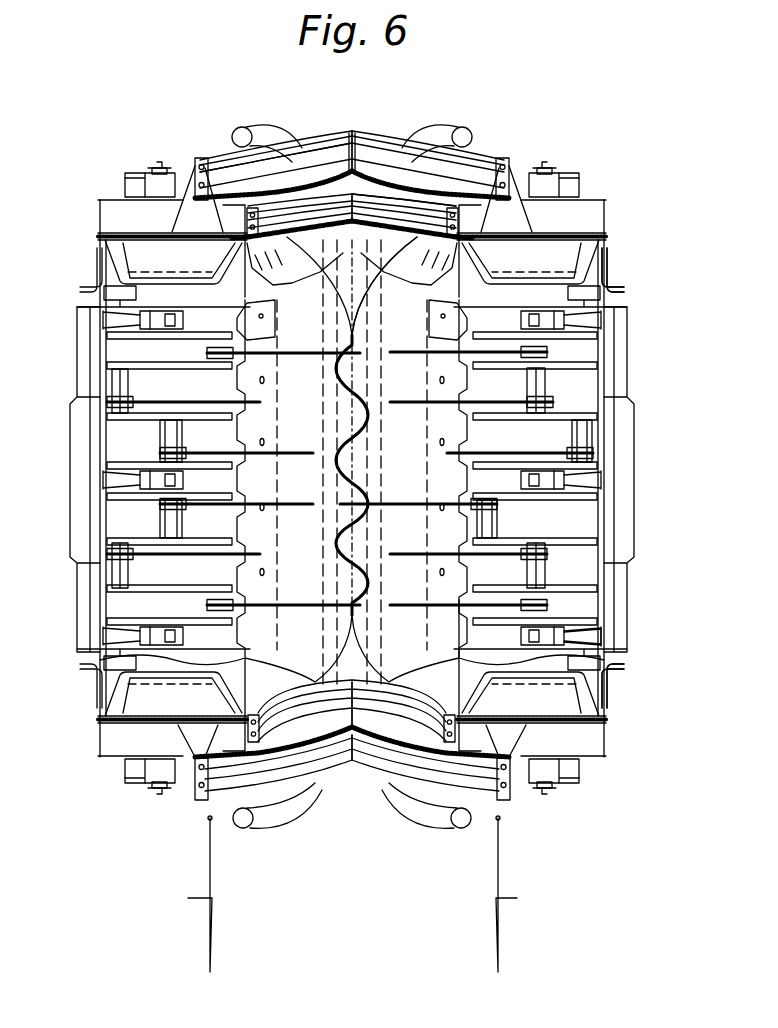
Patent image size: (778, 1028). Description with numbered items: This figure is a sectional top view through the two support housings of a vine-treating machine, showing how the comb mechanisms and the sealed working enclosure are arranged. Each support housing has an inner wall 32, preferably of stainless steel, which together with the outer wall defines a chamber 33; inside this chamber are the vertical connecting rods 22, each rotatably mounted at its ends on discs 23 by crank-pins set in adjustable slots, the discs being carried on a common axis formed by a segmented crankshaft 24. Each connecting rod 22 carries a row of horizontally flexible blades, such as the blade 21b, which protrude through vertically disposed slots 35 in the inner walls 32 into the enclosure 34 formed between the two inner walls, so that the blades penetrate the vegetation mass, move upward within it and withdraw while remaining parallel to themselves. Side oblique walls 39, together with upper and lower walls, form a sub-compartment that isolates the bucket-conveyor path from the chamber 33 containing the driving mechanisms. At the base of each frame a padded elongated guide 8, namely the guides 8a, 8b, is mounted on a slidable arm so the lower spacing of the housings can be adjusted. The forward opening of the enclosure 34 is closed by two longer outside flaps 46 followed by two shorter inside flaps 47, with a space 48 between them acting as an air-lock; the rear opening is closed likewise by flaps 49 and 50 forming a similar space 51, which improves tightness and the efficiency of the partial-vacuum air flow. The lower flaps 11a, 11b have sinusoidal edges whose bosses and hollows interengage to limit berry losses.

The padded elongated guide 8 is at (413, 142).
The padded elongated guide 8a is at (306, 800).
The padded elongated guide 8b is at (432, 824).
The lower flap 11a is at (142, 662).
The lower flap 11b is at (587, 660).
The horizontally flexible blade 21b is at (433, 380).
The vertical connecting rod 22 is at (522, 360).
The disc 23 is at (573, 370).
The segmented crankshaft 24 is at (170, 520).
The inner wall 32 is at (445, 667).
The chamber 33 is at (208, 520).
The enclosure 34 is at (293, 413).
The vertically disposed slot 35 is at (247, 348).
The side oblique wall 39 is at (610, 294).
The flap 46 is at (217, 798).
The flap 47 is at (285, 735).
The space 48 is at (266, 745).
The flap 49 is at (467, 173).
The flap 50 is at (413, 215).
The space 51 is at (340, 185).